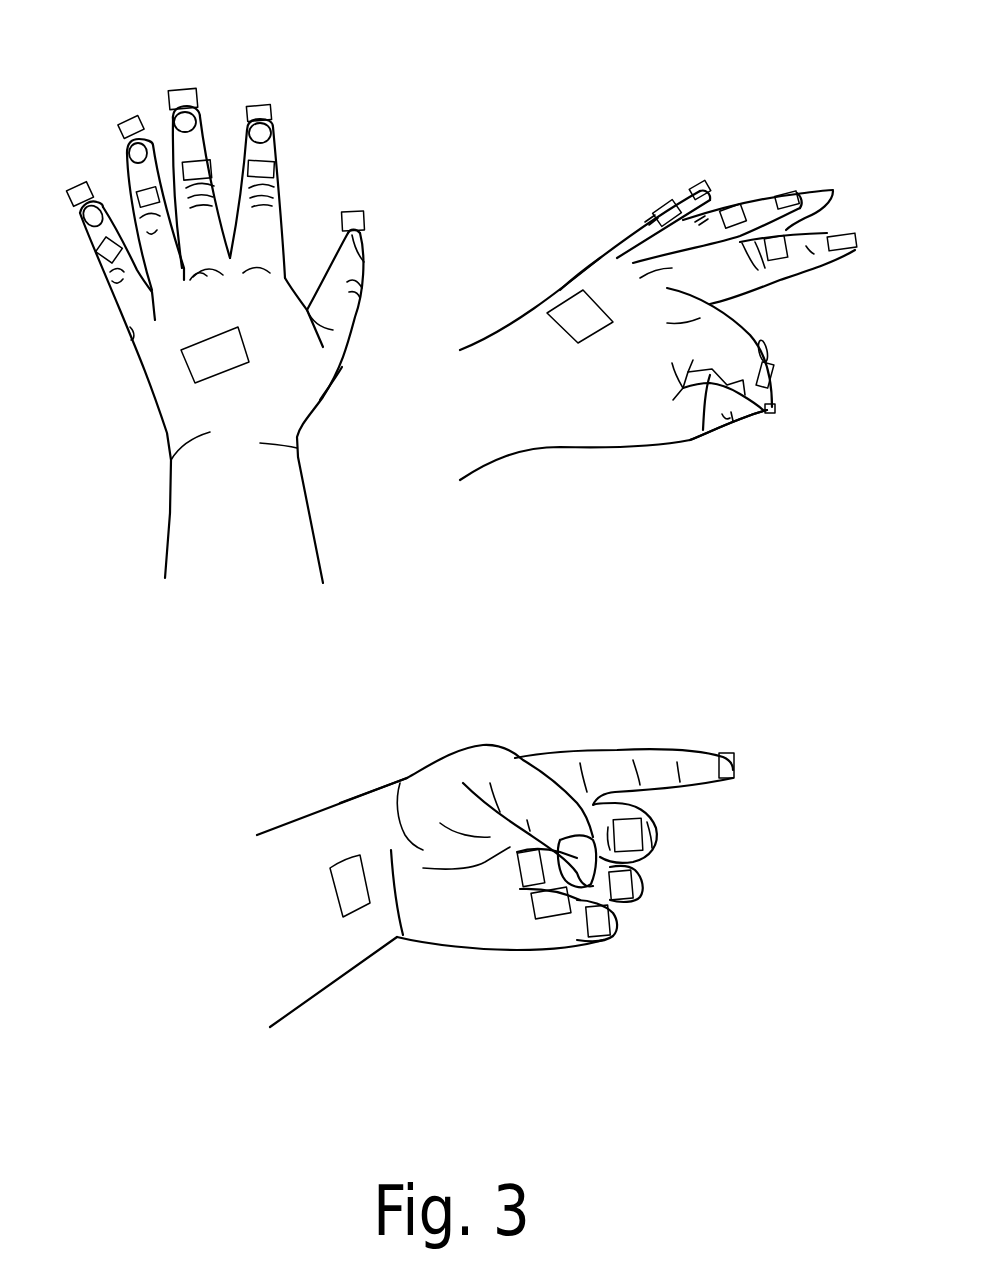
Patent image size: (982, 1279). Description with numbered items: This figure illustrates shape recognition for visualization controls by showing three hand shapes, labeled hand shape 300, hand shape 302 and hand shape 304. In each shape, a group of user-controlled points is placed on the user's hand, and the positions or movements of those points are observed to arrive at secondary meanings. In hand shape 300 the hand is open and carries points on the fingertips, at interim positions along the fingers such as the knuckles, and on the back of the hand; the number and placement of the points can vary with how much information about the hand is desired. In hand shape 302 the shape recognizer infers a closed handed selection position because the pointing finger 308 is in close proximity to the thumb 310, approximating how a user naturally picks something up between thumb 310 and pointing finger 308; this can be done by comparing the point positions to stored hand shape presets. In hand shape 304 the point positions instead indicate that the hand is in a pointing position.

The hand shape 300 is at (126, 66).
The hand shape 302 is at (722, 447).
The hand shape 304 is at (522, 970).
The pointing finger 308 is at (707, 433).
The thumb 310 is at (725, 427).